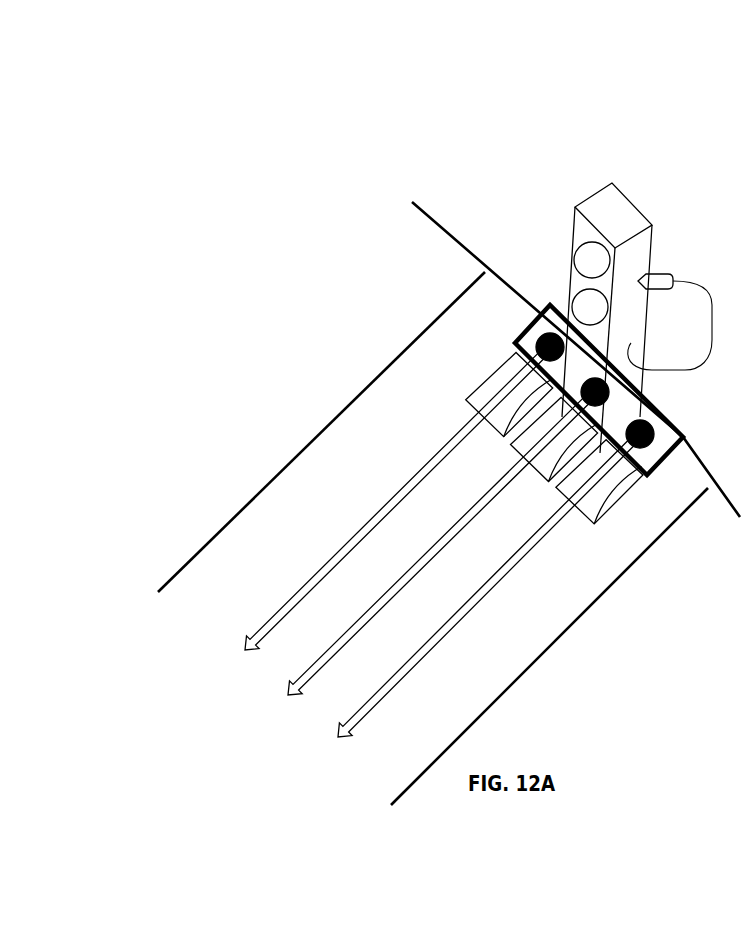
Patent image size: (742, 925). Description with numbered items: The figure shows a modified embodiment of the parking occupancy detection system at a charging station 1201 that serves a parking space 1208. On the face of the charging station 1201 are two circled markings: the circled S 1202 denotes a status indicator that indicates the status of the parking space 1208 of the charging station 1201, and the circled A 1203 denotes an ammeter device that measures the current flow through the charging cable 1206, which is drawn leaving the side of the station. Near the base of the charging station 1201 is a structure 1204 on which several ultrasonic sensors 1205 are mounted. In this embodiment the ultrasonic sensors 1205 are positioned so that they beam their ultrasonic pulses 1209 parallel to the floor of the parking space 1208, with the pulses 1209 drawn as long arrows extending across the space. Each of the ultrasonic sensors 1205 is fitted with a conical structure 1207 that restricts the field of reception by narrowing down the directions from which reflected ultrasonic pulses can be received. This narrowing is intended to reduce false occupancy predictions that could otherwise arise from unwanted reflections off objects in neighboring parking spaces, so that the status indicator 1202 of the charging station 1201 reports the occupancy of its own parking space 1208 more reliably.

The charging station 1201 is at (607, 207).
The status indicator 1202 is at (575, 262).
The ammeter device 1203 is at (572, 304).
The structure 1204 is at (515, 343).
The ultrasonic sensors 1205 is at (515, 346).
The charging cable 1206 is at (703, 347).
The conical structure 1207 is at (490, 383).
The parking space 1208 is at (167, 660).
The ultrasonic pulses 1209 is at (385, 682).